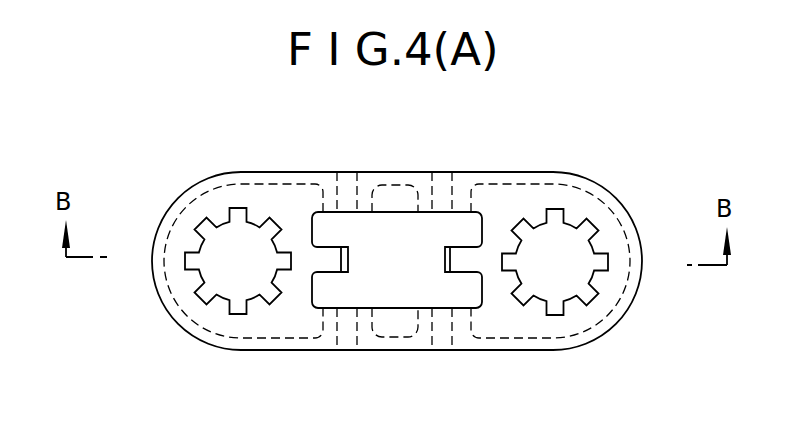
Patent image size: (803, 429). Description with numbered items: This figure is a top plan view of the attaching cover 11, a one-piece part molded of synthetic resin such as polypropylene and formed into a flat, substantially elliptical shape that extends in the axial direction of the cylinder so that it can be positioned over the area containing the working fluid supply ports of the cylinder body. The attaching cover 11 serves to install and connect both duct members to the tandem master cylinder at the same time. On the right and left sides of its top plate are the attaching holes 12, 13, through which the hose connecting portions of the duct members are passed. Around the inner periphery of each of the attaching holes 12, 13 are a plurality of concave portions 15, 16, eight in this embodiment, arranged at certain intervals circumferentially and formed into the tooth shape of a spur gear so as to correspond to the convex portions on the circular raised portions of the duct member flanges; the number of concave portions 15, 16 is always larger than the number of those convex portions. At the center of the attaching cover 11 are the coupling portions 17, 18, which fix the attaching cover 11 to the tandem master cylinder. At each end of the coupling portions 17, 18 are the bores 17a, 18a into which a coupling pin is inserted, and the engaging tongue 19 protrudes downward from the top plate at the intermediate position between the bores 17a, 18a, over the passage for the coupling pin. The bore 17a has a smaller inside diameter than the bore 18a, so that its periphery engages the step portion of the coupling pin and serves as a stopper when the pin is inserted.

The attaching cover 11 is at (262, 358).
The attaching hole 12 is at (248, 229).
The attaching hole 13 is at (582, 279).
The concave portions 15 is at (190, 252).
The concave portions 16 is at (604, 259).
The coupling portion 17 is at (423, 183).
The bore 17a is at (433, 197).
The coupling portion 18 is at (360, 318).
The bore 18a is at (432, 318).
The engaging tongue 19 is at (443, 262).